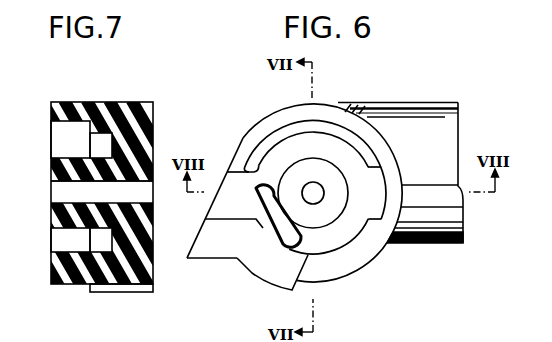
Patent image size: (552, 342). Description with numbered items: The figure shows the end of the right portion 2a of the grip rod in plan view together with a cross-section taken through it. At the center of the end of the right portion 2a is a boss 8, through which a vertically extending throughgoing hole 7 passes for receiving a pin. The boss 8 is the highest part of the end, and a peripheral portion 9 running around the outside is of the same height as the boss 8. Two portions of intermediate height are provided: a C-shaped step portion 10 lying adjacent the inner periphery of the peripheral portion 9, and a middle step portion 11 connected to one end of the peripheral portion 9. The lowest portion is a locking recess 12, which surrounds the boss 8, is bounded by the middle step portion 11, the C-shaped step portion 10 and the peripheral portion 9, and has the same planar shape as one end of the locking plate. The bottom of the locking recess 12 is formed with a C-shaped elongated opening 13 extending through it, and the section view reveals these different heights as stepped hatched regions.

In FIG. 7, the right portion of the grip rod 2a is at (130, 93).
In FIG. 6, the right portion of the grip rod 2a is at (384, 100).
In FIG. 7, the throughgoing hole 7 is at (55, 198).
In FIG. 6, the throughgoing hole 7 is at (314, 200).
In FIG. 7, the boss 8 is at (55, 176).
In FIG. 6, the boss 8 is at (332, 207).
In FIG. 7, the peripheral portion 9 is at (52, 115).
In FIG. 6, the peripheral portion 9 is at (323, 110).
In FIG. 7, the C-shaped step portion 10 is at (88, 141).
In FIG. 6, the C-shaped step portion 10 is at (277, 135).
In FIG. 7, the middle step portion 11 is at (92, 248).
In FIG. 6, the middle step portion 11 is at (213, 252).
In FIG. 7, the locking recess 12 is at (100, 152).
In FIG. 6, the locking recess 12 is at (227, 186).
In FIG. 6, the C-shaped elongated opening 13 is at (285, 237).